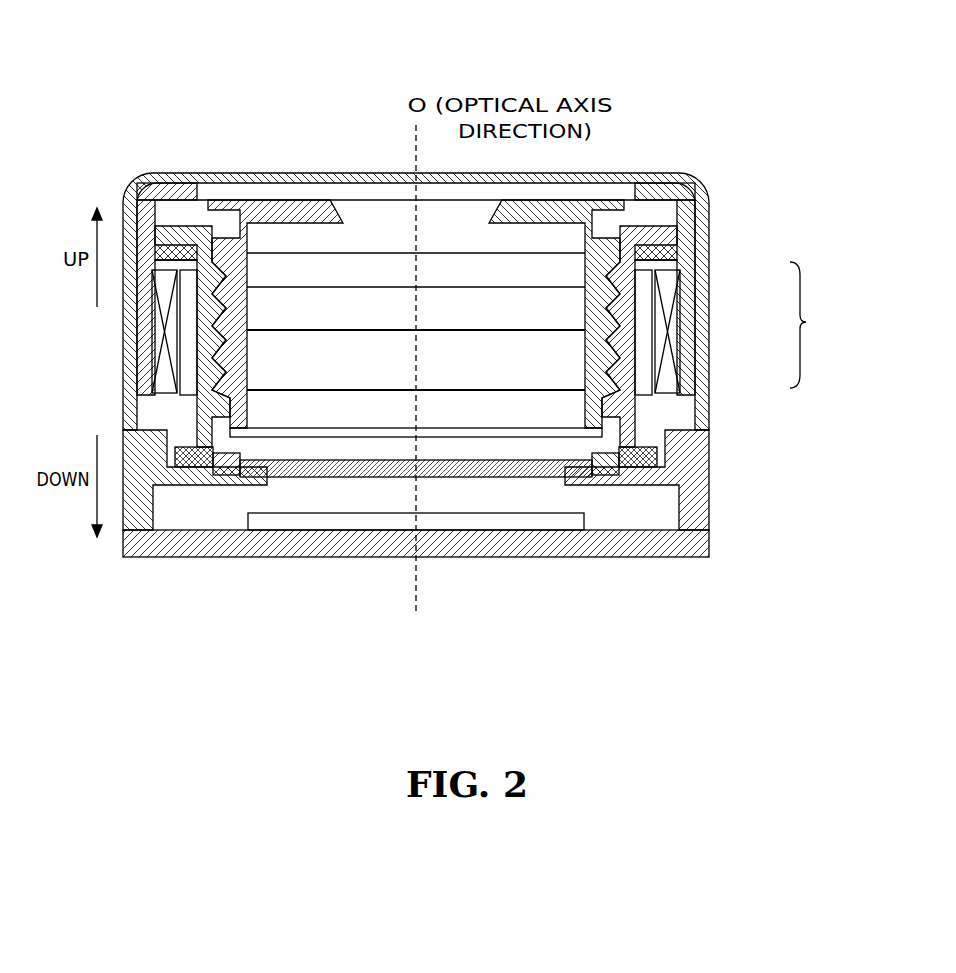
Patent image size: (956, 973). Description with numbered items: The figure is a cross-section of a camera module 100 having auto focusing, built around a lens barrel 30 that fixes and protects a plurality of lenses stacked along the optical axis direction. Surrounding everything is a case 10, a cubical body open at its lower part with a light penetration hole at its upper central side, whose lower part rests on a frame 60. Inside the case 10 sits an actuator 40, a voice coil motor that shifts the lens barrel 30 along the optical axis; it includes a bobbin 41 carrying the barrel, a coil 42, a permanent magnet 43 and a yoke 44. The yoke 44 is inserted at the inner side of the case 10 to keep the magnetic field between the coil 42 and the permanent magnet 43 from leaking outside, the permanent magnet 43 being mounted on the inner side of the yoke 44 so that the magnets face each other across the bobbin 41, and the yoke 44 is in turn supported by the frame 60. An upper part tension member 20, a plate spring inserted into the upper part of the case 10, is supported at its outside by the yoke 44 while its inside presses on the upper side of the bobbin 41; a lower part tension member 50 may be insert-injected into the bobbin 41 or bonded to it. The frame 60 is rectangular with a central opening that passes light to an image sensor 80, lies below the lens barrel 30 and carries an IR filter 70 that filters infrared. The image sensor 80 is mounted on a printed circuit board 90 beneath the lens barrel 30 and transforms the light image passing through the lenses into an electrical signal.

The camera module 100 is at (722, 95).
The case 10 is at (655, 173).
The upper part tension member 20 is at (668, 212).
The lens barrel 30 is at (300, 202).
The actuator 40 is at (812, 325).
The bobbin 41 is at (640, 335).
The coil 42 is at (680, 380).
The permanent magnet 43 is at (650, 345).
The yoke 44 is at (692, 262).
The lower part tension member 50 is at (660, 458).
The frame 60 is at (707, 498).
The IR filter 70 is at (535, 483).
The image sensor 80 is at (377, 557).
The printed circuit board 90 is at (297, 557).